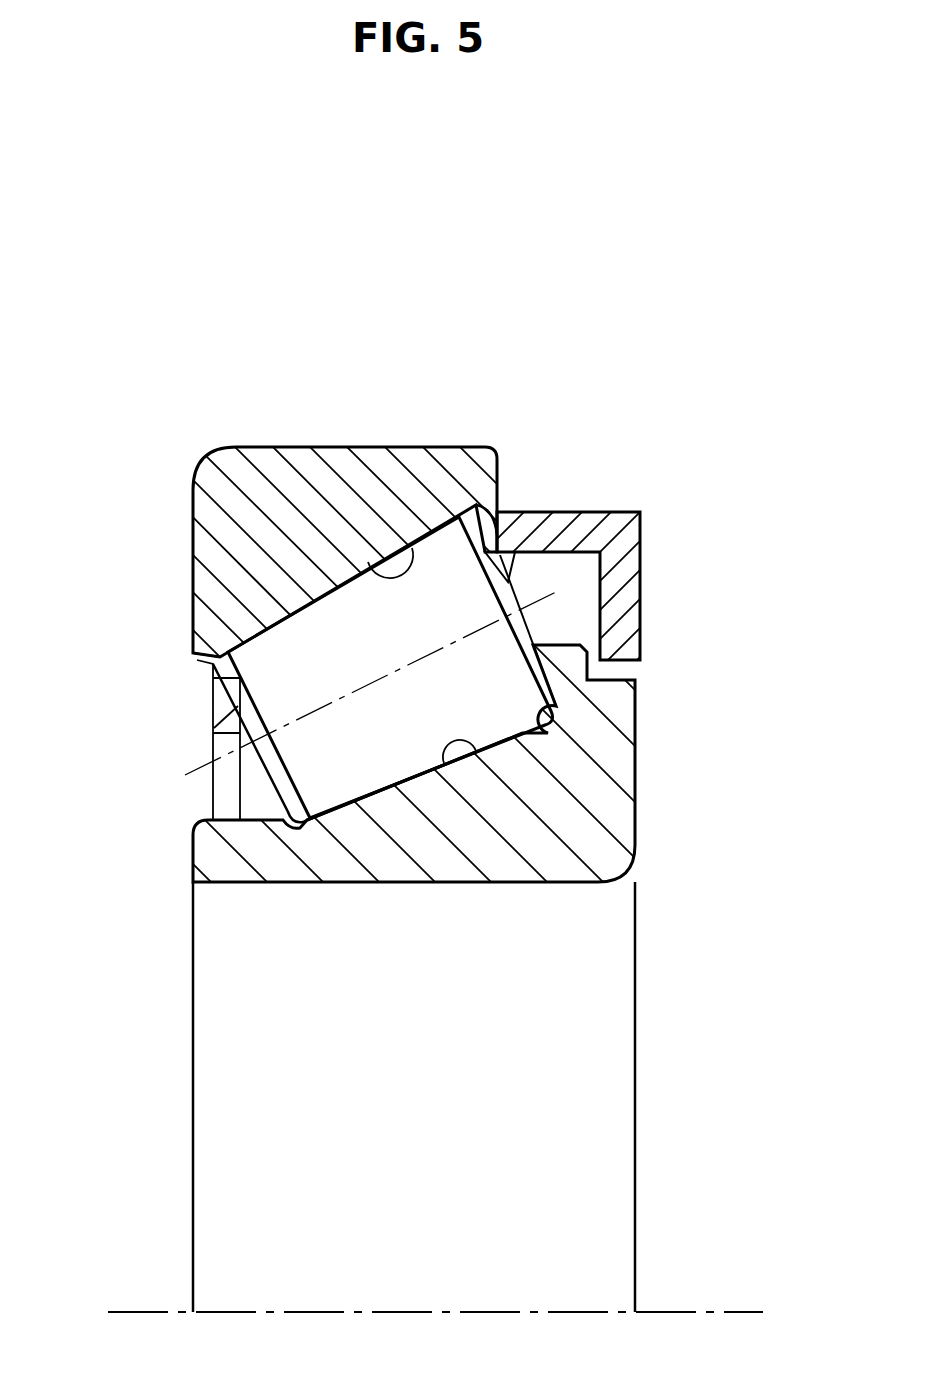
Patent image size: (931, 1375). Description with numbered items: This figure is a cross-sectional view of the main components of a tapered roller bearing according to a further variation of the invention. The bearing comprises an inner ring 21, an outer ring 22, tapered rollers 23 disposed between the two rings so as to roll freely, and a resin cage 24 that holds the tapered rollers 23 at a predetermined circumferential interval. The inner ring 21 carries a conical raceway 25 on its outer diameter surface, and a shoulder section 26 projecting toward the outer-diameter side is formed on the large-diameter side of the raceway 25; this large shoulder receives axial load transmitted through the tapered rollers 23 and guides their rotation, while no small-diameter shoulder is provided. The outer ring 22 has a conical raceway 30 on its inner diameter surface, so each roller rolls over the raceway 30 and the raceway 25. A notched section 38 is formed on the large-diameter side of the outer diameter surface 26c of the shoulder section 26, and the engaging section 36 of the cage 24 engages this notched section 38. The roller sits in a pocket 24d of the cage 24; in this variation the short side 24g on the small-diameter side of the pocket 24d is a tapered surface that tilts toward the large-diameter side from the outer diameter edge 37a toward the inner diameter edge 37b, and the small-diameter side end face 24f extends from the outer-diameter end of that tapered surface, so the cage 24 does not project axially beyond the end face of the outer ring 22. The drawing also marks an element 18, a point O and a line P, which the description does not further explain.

The chamfer of outer ring 18 is at (200, 662).
The inner ring 21 is at (560, 867).
The outer ring 22 is at (343, 475).
The tapered rollers 23 is at (403, 757).
The cage 24 is at (570, 530).
The pocket 24d is at (500, 570).
The small-diameter side end face 24f is at (215, 770).
The short side 24g is at (240, 690).
The raceway 25 is at (474, 760).
The shoulder section 26 is at (600, 695).
The outer diameter surface 26c is at (640, 512).
The raceway 30 is at (477, 587).
The engaging section 36 is at (625, 643).
The outer diameter edge 37a is at (205, 672).
The inner diameter edge 37b is at (285, 730).
The notched section 38 is at (605, 678).
The center point on roller axis O is at (384, 680).
The bearing center line P is at (692, 1312).